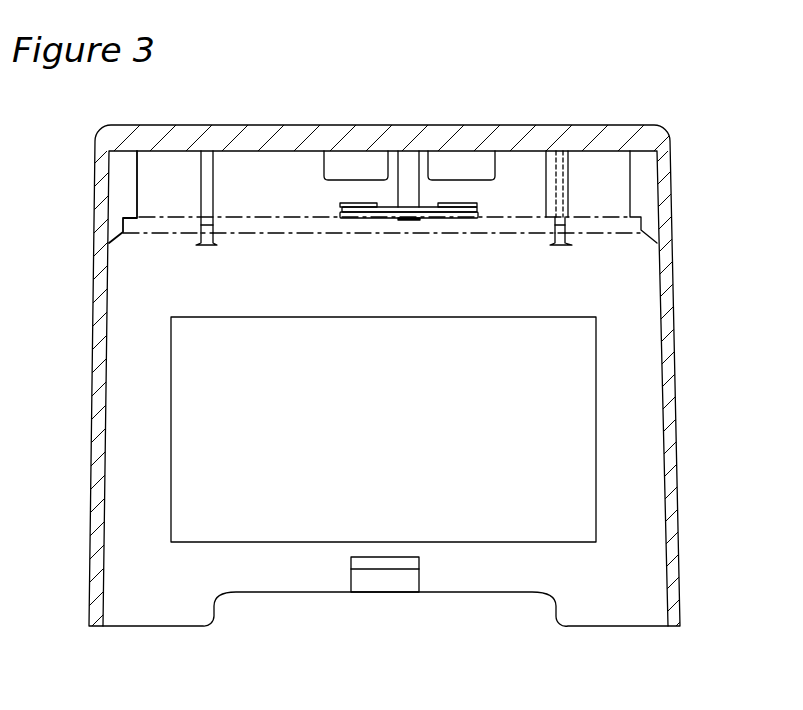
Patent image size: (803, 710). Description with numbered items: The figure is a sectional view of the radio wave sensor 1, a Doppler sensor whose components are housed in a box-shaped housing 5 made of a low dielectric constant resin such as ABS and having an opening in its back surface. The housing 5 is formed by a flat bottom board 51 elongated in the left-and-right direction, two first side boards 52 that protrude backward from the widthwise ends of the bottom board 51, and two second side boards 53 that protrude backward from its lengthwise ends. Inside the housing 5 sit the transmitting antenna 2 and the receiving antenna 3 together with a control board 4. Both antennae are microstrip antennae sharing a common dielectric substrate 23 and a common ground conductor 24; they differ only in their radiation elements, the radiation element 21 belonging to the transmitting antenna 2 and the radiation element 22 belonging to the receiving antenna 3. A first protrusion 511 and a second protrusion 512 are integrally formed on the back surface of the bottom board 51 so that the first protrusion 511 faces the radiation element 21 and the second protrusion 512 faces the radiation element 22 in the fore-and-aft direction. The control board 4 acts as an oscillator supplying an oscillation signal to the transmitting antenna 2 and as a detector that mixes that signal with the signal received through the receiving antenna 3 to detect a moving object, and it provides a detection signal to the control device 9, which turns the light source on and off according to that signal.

The radio wave sensor 1 is at (673, 106).
The transmitting antenna 2 is at (409, 233).
The receiving antenna 3 is at (438, 221).
The control board 4 is at (263, 236).
The housing 5 is at (401, 377).
The control device 9 is at (590, 372).
The radiation element 21 is at (470, 203).
The radiation element 22 is at (343, 204).
The dielectric substrate 23 is at (389, 212).
The ground conductor 24 is at (369, 219).
The bottom board 51 is at (178, 130).
The first side board 52 is at (617, 620).
The second side board 53 is at (92, 316).
The first protrusion 511 is at (486, 163).
The second protrusion 512 is at (327, 166).